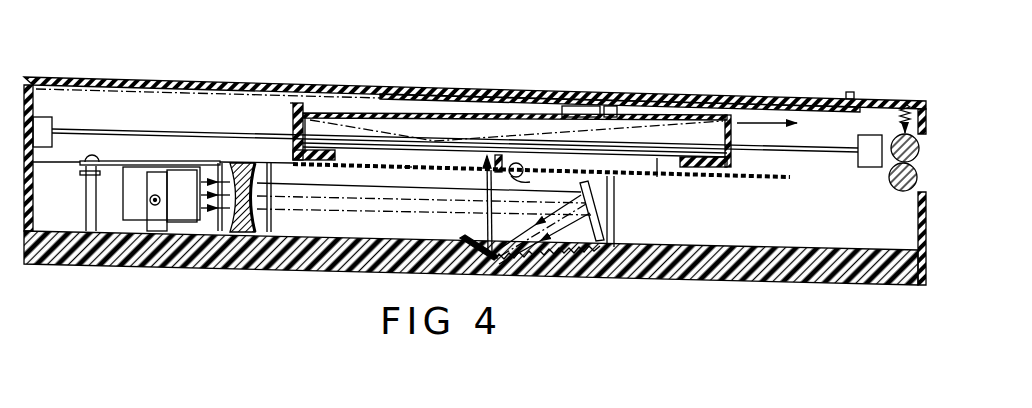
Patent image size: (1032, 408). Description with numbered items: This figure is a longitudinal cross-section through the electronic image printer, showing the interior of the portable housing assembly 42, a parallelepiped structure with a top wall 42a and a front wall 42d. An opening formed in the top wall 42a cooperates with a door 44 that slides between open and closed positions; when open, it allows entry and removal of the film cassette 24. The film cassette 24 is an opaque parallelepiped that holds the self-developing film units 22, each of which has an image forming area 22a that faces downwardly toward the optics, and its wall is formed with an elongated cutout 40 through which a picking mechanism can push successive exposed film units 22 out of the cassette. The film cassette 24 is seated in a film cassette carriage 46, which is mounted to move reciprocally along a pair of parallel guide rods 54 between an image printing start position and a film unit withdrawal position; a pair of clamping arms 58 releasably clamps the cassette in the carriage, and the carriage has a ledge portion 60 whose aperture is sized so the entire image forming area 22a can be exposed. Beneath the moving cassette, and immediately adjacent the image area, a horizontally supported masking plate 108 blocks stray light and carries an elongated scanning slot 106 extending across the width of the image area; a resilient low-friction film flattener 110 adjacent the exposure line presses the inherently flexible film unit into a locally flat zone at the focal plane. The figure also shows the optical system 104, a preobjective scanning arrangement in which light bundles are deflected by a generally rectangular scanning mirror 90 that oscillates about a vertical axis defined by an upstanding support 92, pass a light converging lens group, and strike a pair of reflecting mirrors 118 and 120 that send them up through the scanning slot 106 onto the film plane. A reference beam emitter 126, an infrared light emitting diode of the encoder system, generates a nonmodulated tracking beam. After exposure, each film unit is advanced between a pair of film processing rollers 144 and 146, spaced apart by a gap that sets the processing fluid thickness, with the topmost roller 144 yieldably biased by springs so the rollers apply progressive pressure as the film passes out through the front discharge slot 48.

The portable housing assembly 42 is at (134, 73).
The top wall 42a is at (168, 80).
The front wall 42d is at (929, 223).
The door 44 is at (794, 102).
The guide rods 54 is at (182, 128).
The optical system 104 is at (233, 150).
The cutout 40 is at (294, 110).
The film cassette 24 is at (344, 111).
The film cassette carriage 46 is at (708, 112).
The ledge portion 60 is at (709, 168).
The film units 22 is at (446, 147).
The image forming area 22a is at (658, 174).
The clamping arms 58 is at (585, 106).
The front discharge slot 48 is at (926, 147).
The processing roller 144 is at (897, 135).
The processing roller 146 is at (918, 177).
The upstanding support 92 is at (84, 156).
The scanning mirror 90 is at (185, 175).
The reference beam emitter 126 is at (273, 224).
The masking plate 108 is at (408, 168).
The scanning slot 106 is at (484, 166).
The film flattener 110 is at (530, 178).
The reflecting mirror 120 is at (476, 236).
The reflecting mirror 118 is at (600, 231).